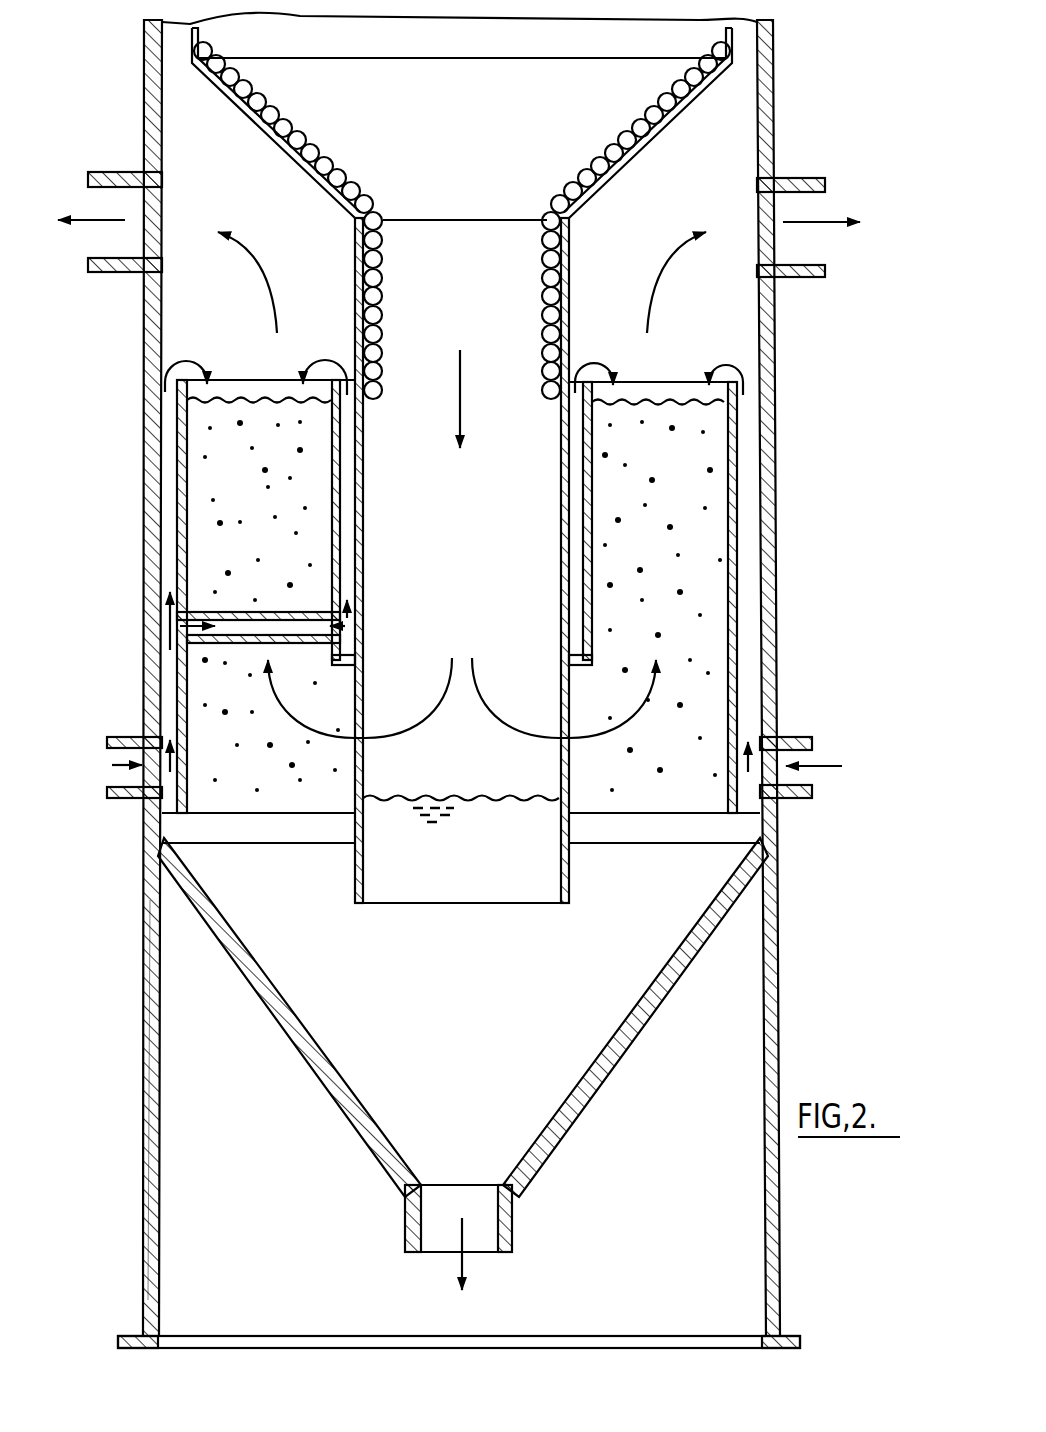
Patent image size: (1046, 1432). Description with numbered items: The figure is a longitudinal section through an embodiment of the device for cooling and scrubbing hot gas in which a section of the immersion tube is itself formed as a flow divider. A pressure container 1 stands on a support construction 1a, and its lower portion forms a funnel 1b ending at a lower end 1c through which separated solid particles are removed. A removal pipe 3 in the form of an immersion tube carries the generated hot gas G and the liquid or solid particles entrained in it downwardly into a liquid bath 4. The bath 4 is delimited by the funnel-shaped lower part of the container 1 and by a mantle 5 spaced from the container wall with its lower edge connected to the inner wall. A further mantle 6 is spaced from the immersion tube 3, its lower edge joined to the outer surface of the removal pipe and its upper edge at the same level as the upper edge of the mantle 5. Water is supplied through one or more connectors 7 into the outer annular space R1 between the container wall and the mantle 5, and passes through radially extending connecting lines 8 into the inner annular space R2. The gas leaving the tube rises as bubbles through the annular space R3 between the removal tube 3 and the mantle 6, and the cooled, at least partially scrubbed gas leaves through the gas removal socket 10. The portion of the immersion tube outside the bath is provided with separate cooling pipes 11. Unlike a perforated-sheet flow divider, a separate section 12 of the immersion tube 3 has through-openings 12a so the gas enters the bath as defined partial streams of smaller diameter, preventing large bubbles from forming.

The pressure container 1 is at (773, 337).
The support construction 1a is at (158, 1055).
The funnel 1b is at (638, 1008).
The lower end 1c is at (406, 1225).
The removal pipe 3 is at (363, 548).
The liquid bath 4 is at (472, 1031).
The mantle 5 is at (737, 535).
The further mantle 6 is at (562, 487).
The connector 7 is at (800, 800).
The connecting line 8 is at (228, 612).
The gas removal socket 10 is at (116, 272).
The cooling pipes 11 is at (378, 297).
The separate section 12 is at (368, 718).
The through-openings 12a is at (368, 782).
The annular space R1 is at (750, 690).
The inner annular space R2 is at (570, 543).
The annular space R3 is at (703, 492).
The hot gas G is at (460, 398).